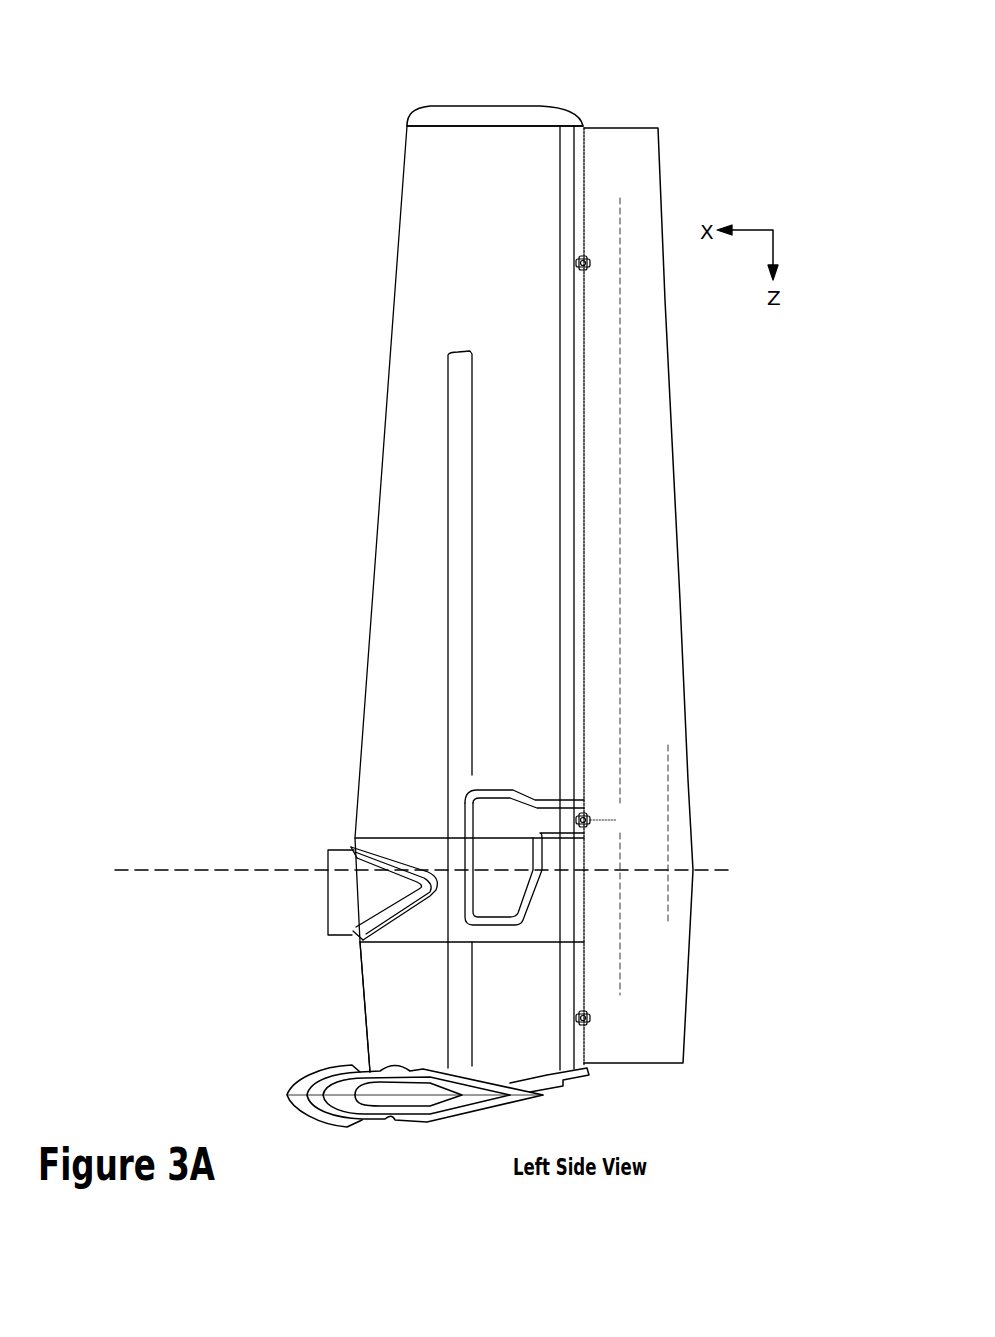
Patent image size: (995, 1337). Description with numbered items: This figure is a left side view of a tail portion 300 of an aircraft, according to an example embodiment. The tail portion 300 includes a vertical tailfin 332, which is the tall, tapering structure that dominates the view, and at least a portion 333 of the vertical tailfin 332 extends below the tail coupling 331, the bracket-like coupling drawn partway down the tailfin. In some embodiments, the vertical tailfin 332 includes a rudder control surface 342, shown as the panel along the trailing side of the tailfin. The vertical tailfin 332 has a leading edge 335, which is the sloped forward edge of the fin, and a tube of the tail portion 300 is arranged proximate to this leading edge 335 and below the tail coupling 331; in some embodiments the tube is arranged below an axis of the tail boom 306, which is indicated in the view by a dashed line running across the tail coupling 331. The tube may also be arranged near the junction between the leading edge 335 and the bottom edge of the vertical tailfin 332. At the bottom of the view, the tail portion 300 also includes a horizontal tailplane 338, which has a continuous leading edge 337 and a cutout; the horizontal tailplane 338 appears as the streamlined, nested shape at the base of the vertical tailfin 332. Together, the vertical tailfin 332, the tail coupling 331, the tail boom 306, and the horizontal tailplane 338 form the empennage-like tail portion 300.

The tail portion 300 is at (314, 208).
The vertical tailfin 332 is at (500, 105).
The leading edge 335 is at (382, 465).
The rudder control surface 342 is at (673, 453).
The tail coupling 331 is at (328, 850).
The tail boom 306 is at (718, 870).
The portion of the vertical tailfin 333 is at (343, 979).
The continuous leading edge 337 is at (287, 1095).
The horizontal tailplane 338 is at (427, 1122).